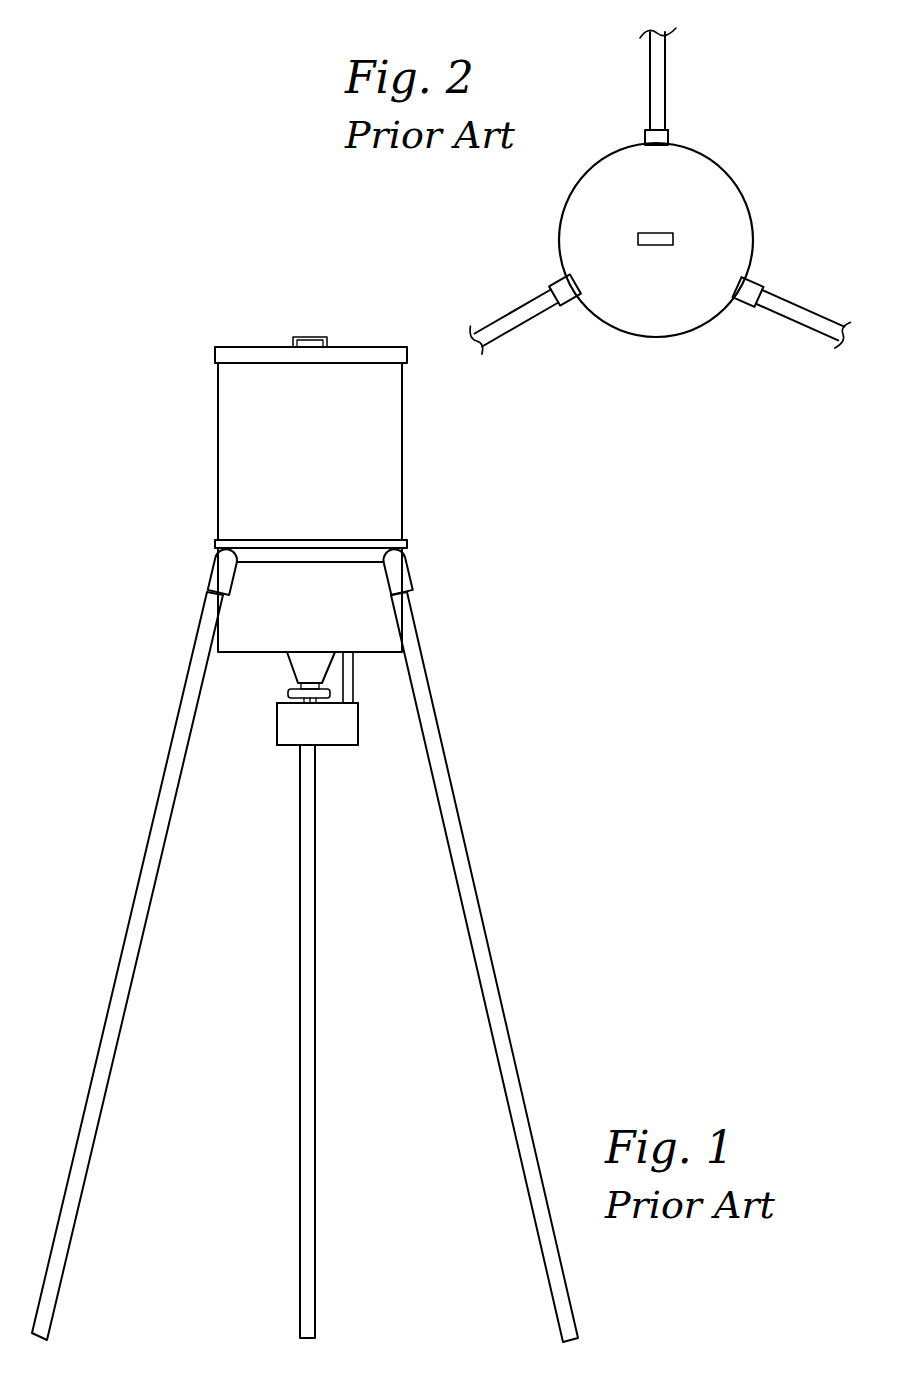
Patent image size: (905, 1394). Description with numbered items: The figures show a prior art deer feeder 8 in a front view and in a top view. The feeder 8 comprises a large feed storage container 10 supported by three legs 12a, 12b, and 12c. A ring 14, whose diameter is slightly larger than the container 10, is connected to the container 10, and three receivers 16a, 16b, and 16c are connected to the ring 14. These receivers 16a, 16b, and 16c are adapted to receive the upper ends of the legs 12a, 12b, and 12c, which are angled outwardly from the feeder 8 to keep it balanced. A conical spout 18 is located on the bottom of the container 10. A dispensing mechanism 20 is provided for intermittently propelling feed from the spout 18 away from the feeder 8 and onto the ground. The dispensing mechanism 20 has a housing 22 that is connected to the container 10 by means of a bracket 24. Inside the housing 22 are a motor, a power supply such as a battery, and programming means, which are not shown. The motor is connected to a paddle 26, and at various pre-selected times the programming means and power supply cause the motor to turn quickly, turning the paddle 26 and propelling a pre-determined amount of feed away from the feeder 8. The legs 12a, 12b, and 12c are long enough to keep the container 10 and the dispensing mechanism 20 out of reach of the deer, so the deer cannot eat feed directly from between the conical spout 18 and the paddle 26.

In FIG. 1, the feeder 8 is at (106, 520).
In FIG. 2, the feeder 8 is at (772, 107).
In FIG. 1, the feed storage container 10 is at (218, 450).
In FIG. 1, the leg 12a is at (146, 860).
In FIG. 2, the leg 12a is at (512, 326).
In FIG. 1, the leg 12b is at (508, 1030).
In FIG. 2, the leg 12b is at (800, 312).
In FIG. 1, the leg 12c is at (317, 1075).
In FIG. 2, the leg 12c is at (650, 78).
In FIG. 1, the ring 14 is at (215, 549).
In FIG. 1, the receiver 16a is at (209, 570).
In FIG. 2, the receiver 16a is at (578, 306).
In FIG. 1, the receiver 16b is at (410, 572).
In FIG. 2, the receiver 16b is at (758, 283).
In FIG. 2, the receiver 16c is at (645, 137).
In FIG. 1, the conical spout 18 is at (287, 664).
In FIG. 1, the dispensing mechanism 20 is at (372, 728).
In FIG. 1, the housing 22 is at (338, 746).
In FIG. 1, the bracket 24 is at (353, 673).
In FIG. 1, the paddle 26 is at (288, 693).